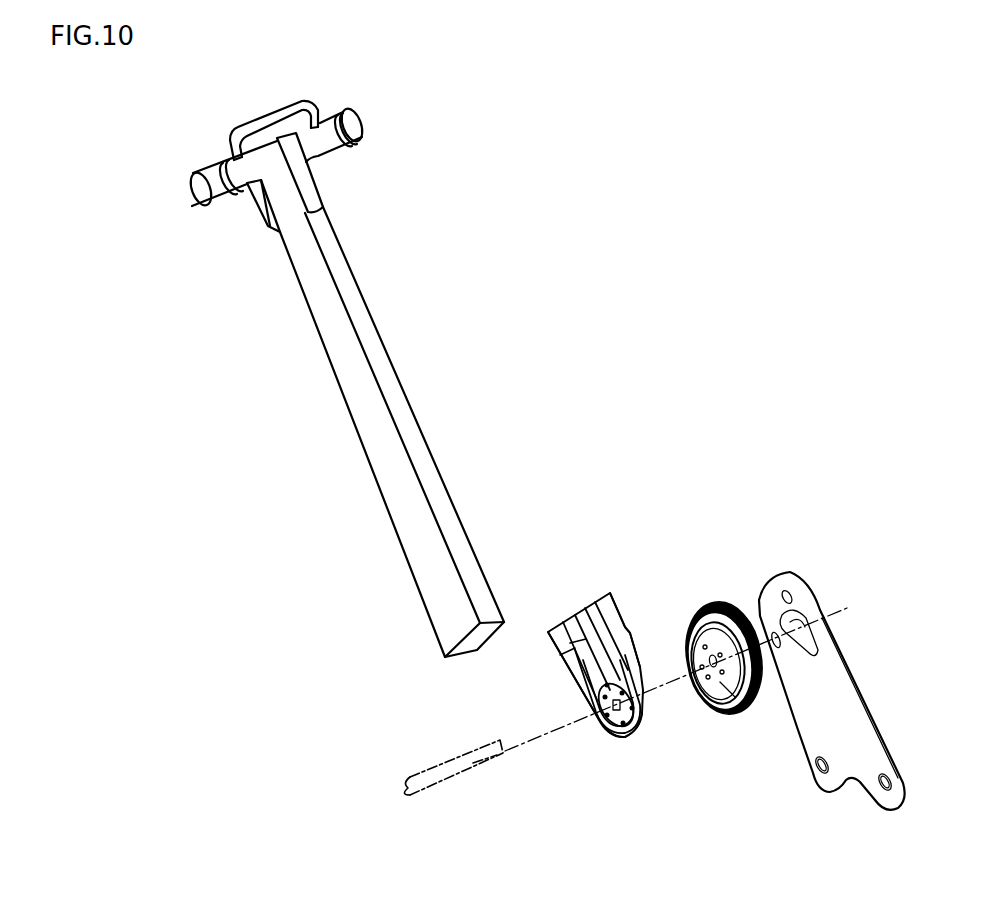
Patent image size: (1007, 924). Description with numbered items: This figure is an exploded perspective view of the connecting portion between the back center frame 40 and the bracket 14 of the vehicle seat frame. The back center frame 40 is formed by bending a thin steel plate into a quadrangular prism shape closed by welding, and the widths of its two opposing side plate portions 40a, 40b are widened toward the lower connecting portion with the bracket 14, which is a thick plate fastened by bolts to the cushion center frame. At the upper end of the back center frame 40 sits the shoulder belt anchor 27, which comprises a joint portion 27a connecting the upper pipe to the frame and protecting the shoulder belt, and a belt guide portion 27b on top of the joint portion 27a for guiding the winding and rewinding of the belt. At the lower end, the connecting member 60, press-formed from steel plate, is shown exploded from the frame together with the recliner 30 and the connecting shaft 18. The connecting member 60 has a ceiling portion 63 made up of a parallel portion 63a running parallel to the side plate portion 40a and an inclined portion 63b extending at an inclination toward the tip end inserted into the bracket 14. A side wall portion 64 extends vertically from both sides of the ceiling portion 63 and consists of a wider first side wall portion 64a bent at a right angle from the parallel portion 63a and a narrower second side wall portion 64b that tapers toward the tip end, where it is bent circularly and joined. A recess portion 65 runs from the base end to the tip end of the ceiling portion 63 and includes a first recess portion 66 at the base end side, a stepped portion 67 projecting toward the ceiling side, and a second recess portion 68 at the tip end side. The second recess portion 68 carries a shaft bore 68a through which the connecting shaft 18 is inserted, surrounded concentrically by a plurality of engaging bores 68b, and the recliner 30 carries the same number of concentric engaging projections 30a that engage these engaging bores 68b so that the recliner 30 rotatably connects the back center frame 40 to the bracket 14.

The bracket 14 is at (842, 690).
The connecting shaft 18 is at (412, 782).
The shoulder belt anchor 27 is at (126, 127).
The joint portion 27a is at (222, 168).
The belt guide portion 27b is at (281, 124).
The recliner 30 is at (739, 593).
The engaging projections 30a is at (735, 697).
The back center frame 40 is at (300, 396).
The side plate portion 40a is at (390, 480).
The side plate portion 40b is at (428, 470).
The connecting member 60 is at (621, 552).
The ceiling portion 63 is at (600, 549).
The parallel portion 63a is at (586, 605).
The inclined portion 63b is at (592, 617).
The side wall portion 64 is at (684, 565).
The first side wall portion 64a is at (612, 620).
The second side wall portion 64b is at (632, 668).
The recess portion 65 is at (507, 658).
The first recess portion 66 is at (585, 648).
The stepped portion 67 is at (592, 672).
The second recess portion 68 is at (598, 702).
The shaft bore 68a is at (597, 728).
The engaging bores 68b is at (618, 735).